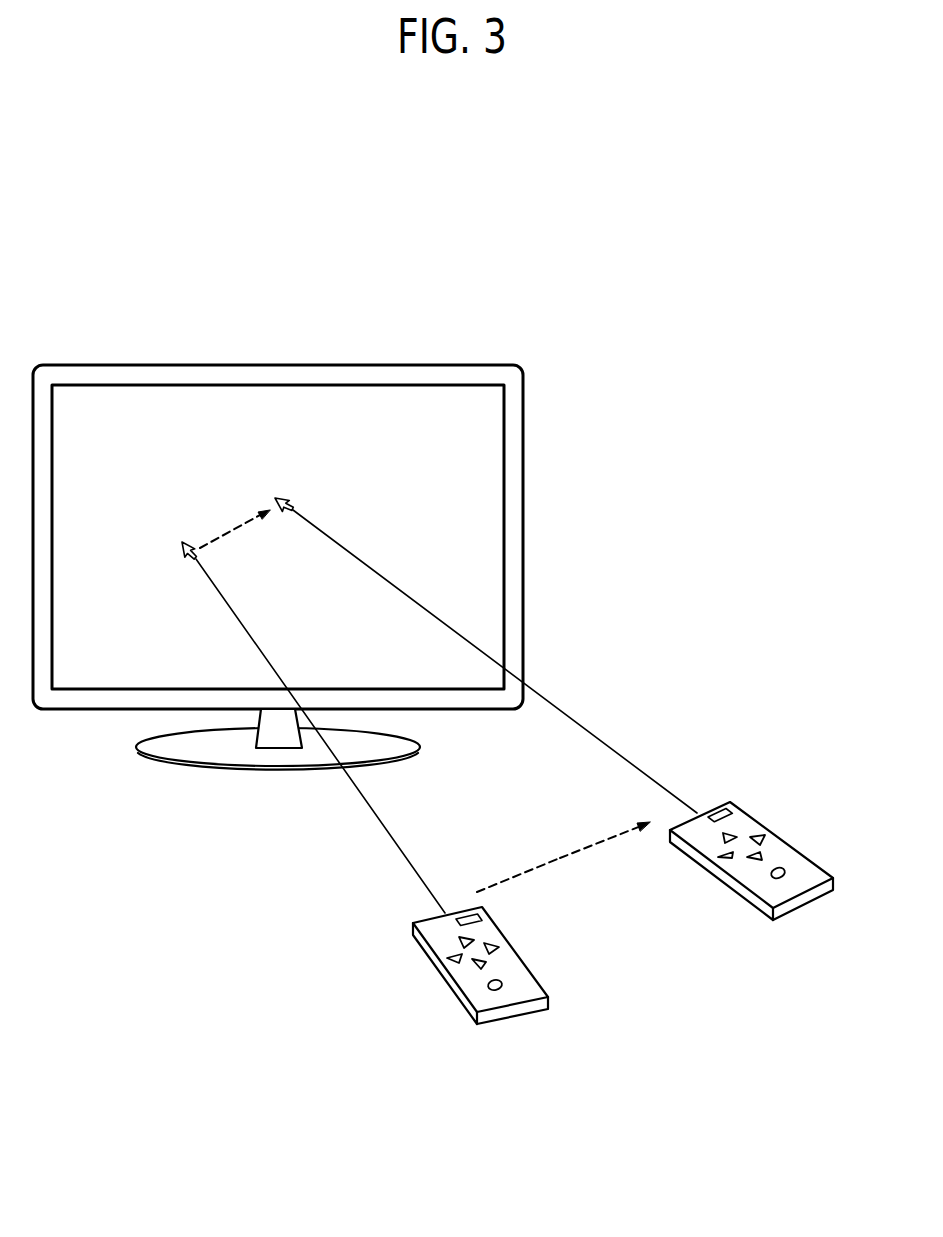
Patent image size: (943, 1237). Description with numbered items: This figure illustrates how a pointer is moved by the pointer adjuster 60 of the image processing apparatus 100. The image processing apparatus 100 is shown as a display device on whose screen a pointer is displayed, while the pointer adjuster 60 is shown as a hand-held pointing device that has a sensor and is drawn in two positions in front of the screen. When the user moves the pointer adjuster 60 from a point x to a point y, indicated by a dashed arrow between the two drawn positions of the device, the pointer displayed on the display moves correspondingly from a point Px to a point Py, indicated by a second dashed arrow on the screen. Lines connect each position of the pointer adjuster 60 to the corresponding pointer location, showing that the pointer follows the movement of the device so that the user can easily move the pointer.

The image processing apparatus 100 is at (283, 365).
The pointer adjuster 60 is at (500, 1017).
The point Px is at (174, 550).
The point Py is at (286, 494).
The point x is at (508, 882).
The point y is at (614, 829).